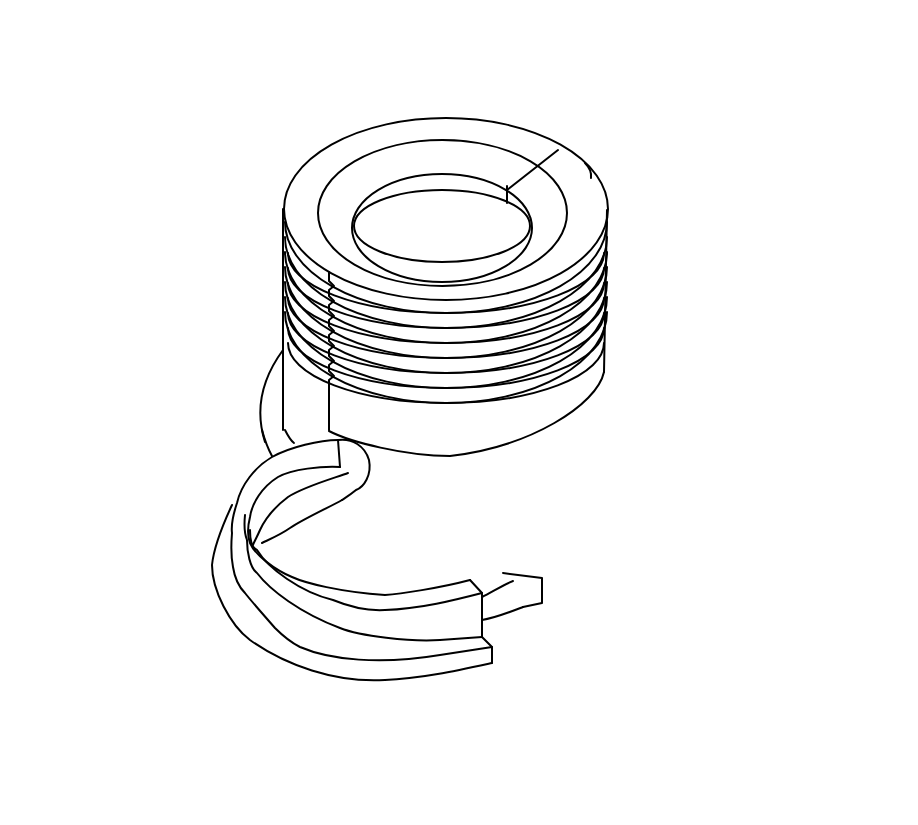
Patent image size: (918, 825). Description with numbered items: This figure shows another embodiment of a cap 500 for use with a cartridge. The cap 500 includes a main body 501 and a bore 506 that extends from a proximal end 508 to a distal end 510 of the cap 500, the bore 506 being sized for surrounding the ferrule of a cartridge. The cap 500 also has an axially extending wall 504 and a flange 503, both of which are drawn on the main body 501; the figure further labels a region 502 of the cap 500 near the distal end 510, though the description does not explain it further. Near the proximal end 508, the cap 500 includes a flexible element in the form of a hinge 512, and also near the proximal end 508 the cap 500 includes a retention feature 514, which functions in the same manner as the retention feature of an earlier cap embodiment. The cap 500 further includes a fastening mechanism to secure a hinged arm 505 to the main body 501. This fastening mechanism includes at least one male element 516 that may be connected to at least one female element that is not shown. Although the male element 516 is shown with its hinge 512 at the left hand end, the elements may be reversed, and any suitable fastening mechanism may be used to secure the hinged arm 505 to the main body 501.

The cap 500 is at (674, 86).
The distal end 510 is at (276, 112).
The top face 502 is at (372, 148).
The bore 506 is at (465, 218).
The main body 501 is at (606, 268).
The axially extending wall 504 is at (607, 357).
The flange 503 is at (278, 398).
The proximal end 508 is at (197, 540).
The hinge 512 is at (238, 457).
The retention feature 514 is at (333, 493).
The hinged arm 505 is at (288, 650).
The male element 516 is at (523, 607).